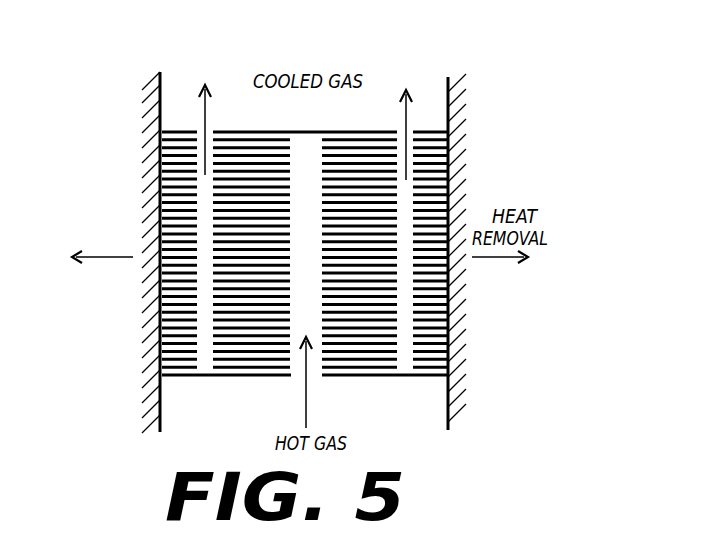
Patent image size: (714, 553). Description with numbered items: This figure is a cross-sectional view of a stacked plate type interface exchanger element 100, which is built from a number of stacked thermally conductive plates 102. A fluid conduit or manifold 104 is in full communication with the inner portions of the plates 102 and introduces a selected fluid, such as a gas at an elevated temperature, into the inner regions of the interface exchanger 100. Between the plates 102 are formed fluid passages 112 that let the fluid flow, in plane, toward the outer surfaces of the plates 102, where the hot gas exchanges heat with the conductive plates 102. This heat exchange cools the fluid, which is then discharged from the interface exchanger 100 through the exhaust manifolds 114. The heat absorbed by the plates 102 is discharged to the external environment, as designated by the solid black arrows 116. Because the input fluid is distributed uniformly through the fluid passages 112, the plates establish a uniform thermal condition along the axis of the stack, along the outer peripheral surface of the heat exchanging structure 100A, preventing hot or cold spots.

The stacked plate type interface exchanger element 100 is at (400, 53).
The heat exchanging structure 100A is at (161, 212).
The thermally conductive plates 102 is at (165, 347).
The fluid conduit or manifold 104 is at (322, 360).
The fluid passages 112 is at (298, 148).
The exhaust manifolds 114 is at (197, 132).
The solid black arrows 116 is at (122, 258).